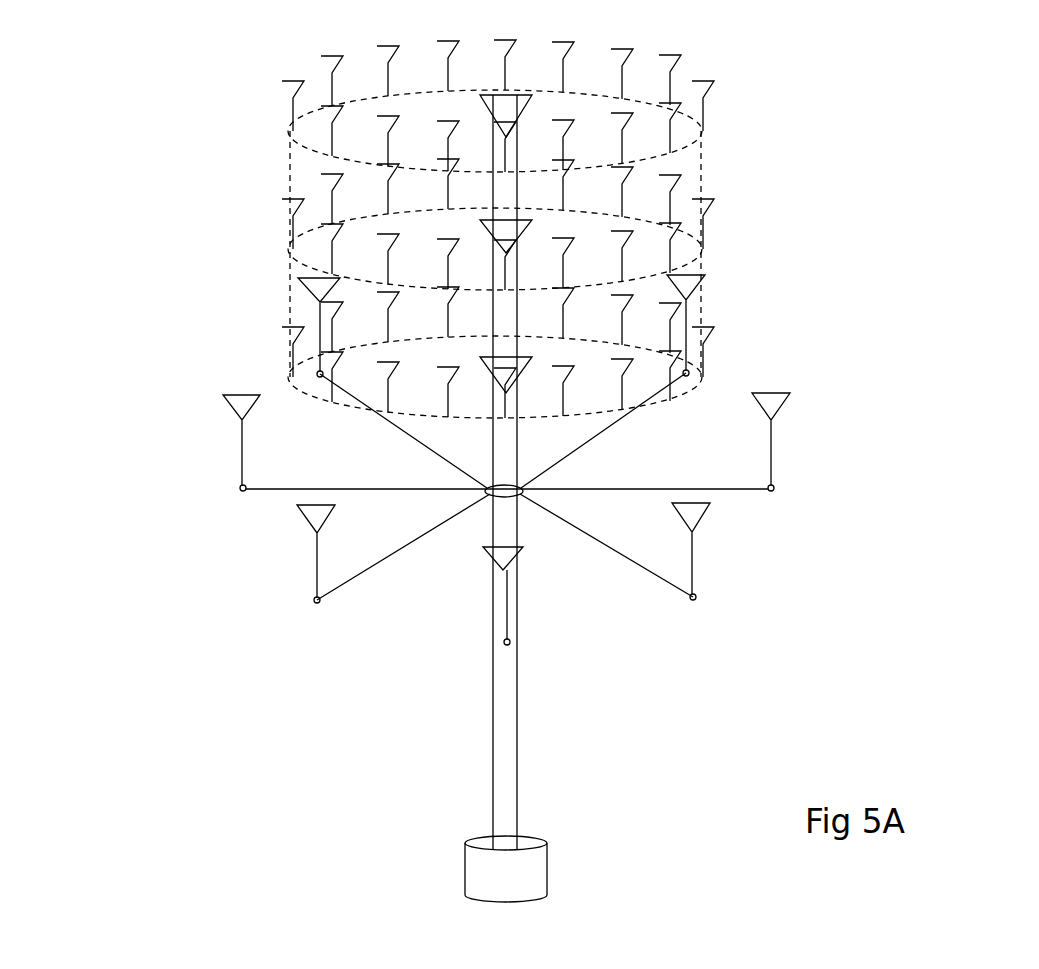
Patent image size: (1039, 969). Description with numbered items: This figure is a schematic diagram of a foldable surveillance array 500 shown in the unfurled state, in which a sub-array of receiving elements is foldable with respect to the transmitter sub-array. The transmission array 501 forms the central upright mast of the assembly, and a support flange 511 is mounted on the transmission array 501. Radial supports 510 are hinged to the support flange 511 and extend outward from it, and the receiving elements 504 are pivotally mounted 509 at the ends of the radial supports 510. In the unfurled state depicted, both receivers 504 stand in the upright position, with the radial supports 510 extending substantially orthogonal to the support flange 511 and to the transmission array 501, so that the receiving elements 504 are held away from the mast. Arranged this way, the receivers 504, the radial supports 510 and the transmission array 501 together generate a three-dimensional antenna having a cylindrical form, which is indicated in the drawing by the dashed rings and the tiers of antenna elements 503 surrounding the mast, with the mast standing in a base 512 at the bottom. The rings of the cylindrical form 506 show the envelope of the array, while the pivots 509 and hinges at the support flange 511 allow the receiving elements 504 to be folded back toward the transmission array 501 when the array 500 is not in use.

The surveillance array 500 is at (862, 313).
The transmission array 501 is at (502, 724).
The antenna elements 503 is at (483, 357).
The receiving elements 504 is at (237, 400).
The cylindrical array rings 506 is at (695, 370).
The pivotal mounting 509 is at (241, 489).
The radial supports 510 is at (280, 490).
The support flange 511 is at (517, 497).
The base 512 is at (535, 880).